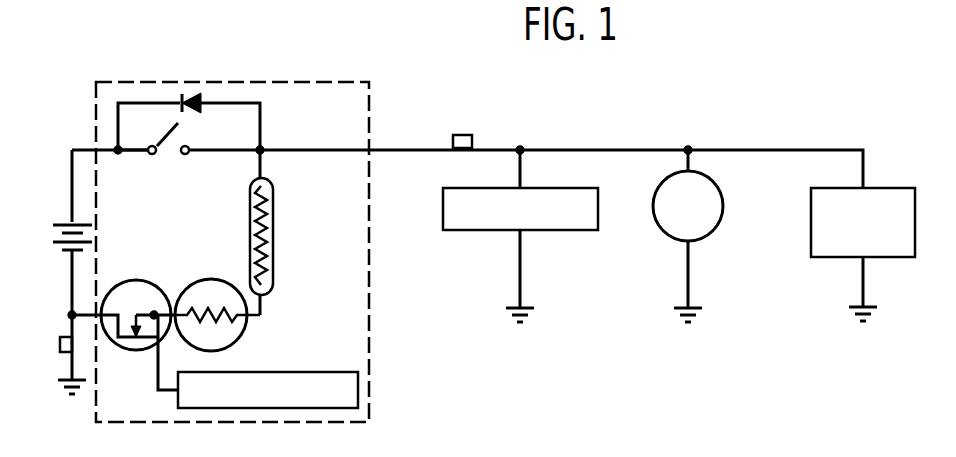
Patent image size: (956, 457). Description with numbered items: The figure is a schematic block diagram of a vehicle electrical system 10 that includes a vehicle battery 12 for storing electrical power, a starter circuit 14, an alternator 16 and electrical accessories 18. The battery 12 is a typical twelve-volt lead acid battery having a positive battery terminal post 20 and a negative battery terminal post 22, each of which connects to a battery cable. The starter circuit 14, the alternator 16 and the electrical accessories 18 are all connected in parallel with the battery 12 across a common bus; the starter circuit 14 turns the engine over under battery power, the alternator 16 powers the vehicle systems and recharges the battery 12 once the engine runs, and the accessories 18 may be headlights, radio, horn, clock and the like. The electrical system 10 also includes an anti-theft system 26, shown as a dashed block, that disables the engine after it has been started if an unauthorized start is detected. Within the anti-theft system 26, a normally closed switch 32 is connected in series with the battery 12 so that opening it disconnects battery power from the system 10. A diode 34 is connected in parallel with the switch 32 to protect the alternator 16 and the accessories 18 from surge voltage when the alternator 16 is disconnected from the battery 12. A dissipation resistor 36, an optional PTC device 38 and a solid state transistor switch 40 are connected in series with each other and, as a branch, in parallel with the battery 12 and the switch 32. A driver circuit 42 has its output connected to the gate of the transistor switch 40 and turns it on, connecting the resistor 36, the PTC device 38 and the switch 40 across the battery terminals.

The vehicle electrical system 10 is at (666, 85).
The vehicle battery 12 is at (56, 225).
The starter circuit 14 is at (831, 258).
The alternator 16 is at (723, 205).
The electrical accessories 18 is at (563, 232).
The positive battery terminal post 20 is at (460, 134).
The negative battery terminal post 22 is at (59, 346).
The anti-theft system 26 is at (298, 82).
The switch 32 is at (160, 153).
The diode 34 is at (184, 93).
The dissipation resistor 36 is at (273, 229).
The positive temperature coefficient (PTC) device 38 is at (213, 280).
The solid state transistor switch 40 is at (142, 281).
The driver circuit 42 is at (314, 372).